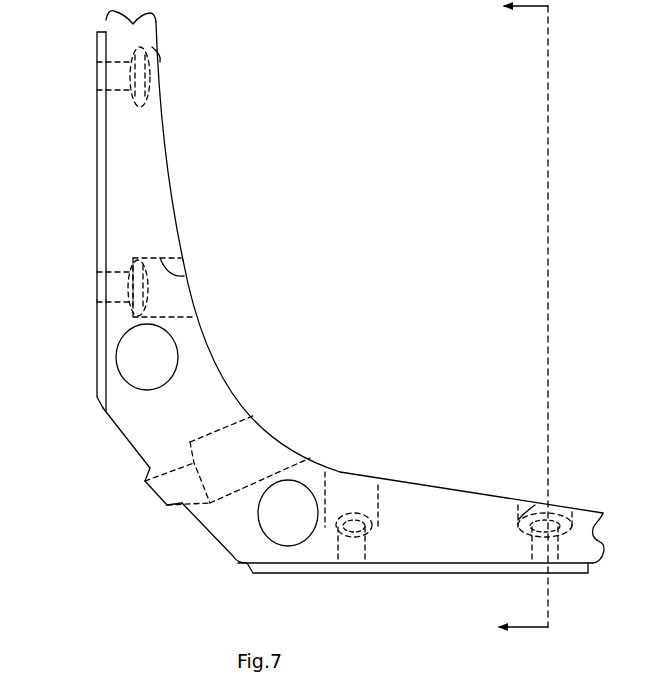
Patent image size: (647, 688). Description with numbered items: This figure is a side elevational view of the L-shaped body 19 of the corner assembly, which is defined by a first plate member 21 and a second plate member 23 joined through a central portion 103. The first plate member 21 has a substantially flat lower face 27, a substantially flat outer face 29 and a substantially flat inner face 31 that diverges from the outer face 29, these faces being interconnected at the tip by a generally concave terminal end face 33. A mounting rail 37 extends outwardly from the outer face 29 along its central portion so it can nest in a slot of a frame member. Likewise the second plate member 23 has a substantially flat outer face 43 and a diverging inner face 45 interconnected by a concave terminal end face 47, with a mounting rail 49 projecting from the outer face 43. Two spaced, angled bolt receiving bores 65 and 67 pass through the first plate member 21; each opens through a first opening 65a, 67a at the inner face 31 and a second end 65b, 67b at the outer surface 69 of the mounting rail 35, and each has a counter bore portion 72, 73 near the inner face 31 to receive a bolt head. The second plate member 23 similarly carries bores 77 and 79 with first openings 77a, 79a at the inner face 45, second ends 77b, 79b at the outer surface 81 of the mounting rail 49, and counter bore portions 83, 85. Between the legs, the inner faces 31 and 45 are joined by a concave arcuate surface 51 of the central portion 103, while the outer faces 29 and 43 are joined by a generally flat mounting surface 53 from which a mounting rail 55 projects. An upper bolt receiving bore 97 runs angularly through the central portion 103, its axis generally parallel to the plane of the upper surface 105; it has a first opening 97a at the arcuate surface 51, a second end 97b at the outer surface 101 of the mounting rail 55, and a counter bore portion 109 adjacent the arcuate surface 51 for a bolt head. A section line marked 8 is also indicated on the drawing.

The section line 8- 8 is at (521, 334).
The L-shaped body 19 is at (284, 365).
The first plate member 21 is at (424, 477).
The second plate member 23 is at (177, 182).
The lower face 27 is at (641, 528).
The outer face 29 is at (420, 568).
The inner face 31 is at (480, 496).
The terminal end face 33 is at (603, 541).
The mounting rail 35 is at (641, 480).
The mounting rail 37 is at (388, 573).
The outer face 43 is at (103, 165).
The inner face 45 is at (168, 132).
The terminal end face 47 is at (144, 0).
The mounting rail 49 is at (98, 332).
The arcuate surface 51 is at (206, 345).
The mounting surface 53 is at (118, 440).
The mounting rail 55 is at (141, 479).
The bolt receiving bore 65 is at (533, 507).
The first opening 65a is at (567, 511).
The second end 65b is at (553, 575).
The bolt receiving bore 67 is at (372, 480).
The first opening 67a is at (335, 473).
The second end 67b is at (363, 570).
The outer surface 69 is at (307, 576).
The counter bore portion 72 is at (547, 505).
The counter bore portion 73 is at (330, 480).
The bolt receiving bore 77 is at (163, 95).
The first opening 77a is at (157, 50).
The second end 77b is at (100, 63).
The bolt receiving bore 79 is at (179, 308).
The first opening 79a is at (180, 260).
The second end 79b is at (97, 273).
The outer surface 81 is at (97, 118).
The counter bore portion 83 is at (165, 57).
The counter bore portion 85 is at (187, 272).
The bolt receiving bore 97 is at (240, 433).
The first opening 97a is at (305, 463).
The second end 97b is at (169, 508).
The outer surface 101 is at (165, 506).
The central portion 103 is at (206, 545).
The upper surface 105 is at (173, 0).
The counter bore portion 109 is at (227, 497).